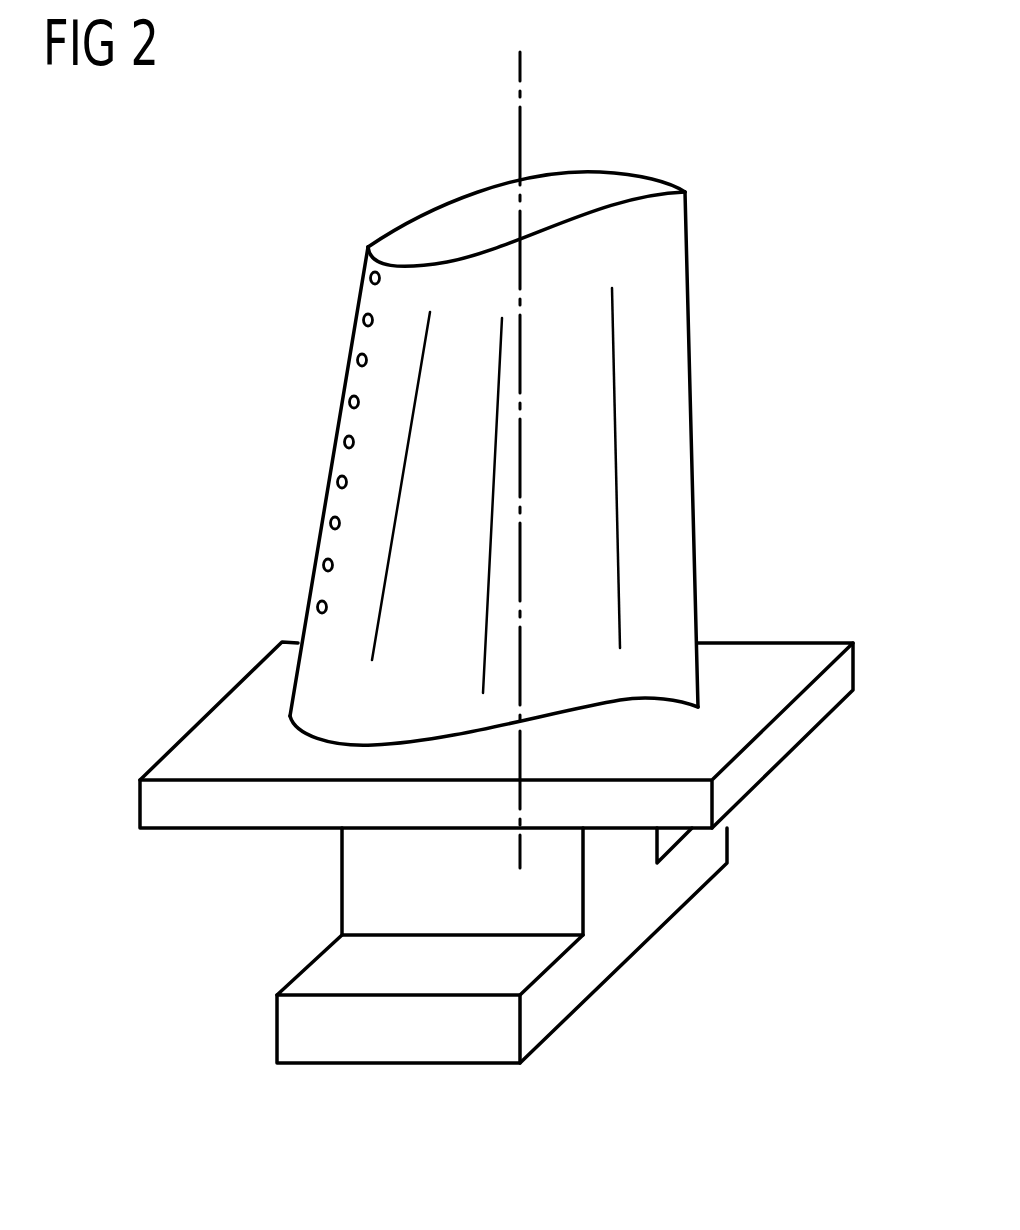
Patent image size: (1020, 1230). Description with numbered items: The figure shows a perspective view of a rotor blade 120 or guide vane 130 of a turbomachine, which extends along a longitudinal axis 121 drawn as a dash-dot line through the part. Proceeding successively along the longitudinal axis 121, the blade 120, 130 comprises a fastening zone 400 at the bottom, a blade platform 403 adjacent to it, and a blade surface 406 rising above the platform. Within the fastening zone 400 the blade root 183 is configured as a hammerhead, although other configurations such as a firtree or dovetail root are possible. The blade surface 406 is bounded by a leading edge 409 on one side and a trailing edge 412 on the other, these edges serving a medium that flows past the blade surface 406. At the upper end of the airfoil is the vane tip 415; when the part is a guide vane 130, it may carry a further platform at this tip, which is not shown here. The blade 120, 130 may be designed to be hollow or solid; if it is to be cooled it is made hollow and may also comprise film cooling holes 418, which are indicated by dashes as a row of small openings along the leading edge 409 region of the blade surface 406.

The rotor blade 120 is at (476, 552).
The guide vane 130 is at (238, 464).
The longitudinal axis 121 is at (521, 80).
The blade root 183 is at (326, 972).
The fastening zone 400 is at (655, 908).
The blade platform 403 is at (795, 726).
The blade surface 406 is at (352, 508).
The leading edge 409 is at (325, 374).
The trailing edge 412 is at (708, 405).
The vane tip 415 is at (437, 216).
The film cooling holes 418 is at (360, 292).